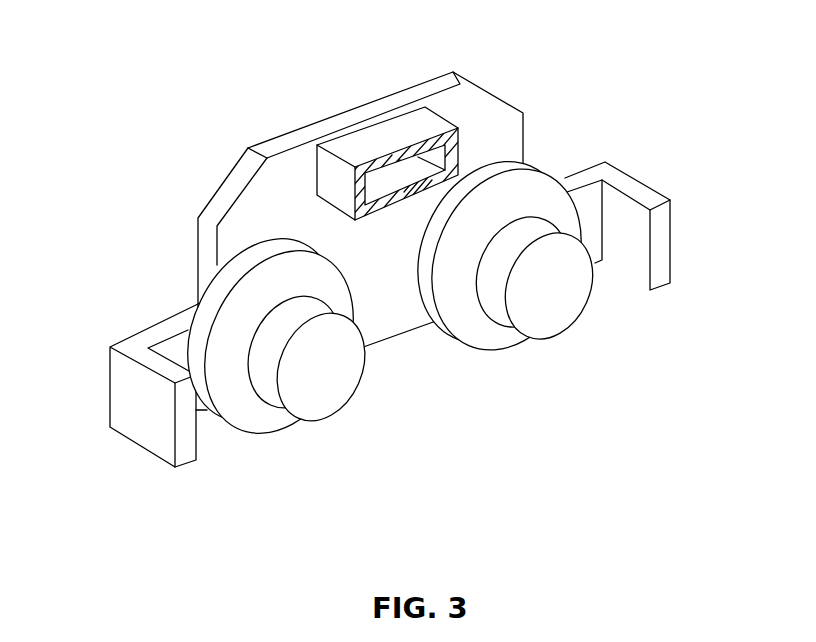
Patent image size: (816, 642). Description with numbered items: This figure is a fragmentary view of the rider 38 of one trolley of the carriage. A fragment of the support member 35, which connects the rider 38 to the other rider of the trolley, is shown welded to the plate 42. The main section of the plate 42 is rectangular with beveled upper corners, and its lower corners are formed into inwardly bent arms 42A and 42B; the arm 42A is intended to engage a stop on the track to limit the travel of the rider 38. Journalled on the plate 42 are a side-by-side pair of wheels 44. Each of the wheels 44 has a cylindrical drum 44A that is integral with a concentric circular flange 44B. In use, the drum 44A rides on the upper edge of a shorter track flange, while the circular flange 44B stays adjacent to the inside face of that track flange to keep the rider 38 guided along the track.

The rider 38 is at (388, 258).
The plate 42 is at (371, 282).
The arm 42A is at (637, 178).
The arm 42B is at (147, 450).
The support member 35 is at (440, 113).
The wheels 44 is at (438, 323).
The cylindrical drum 44A is at (320, 423).
The circular flange 44B is at (243, 432).